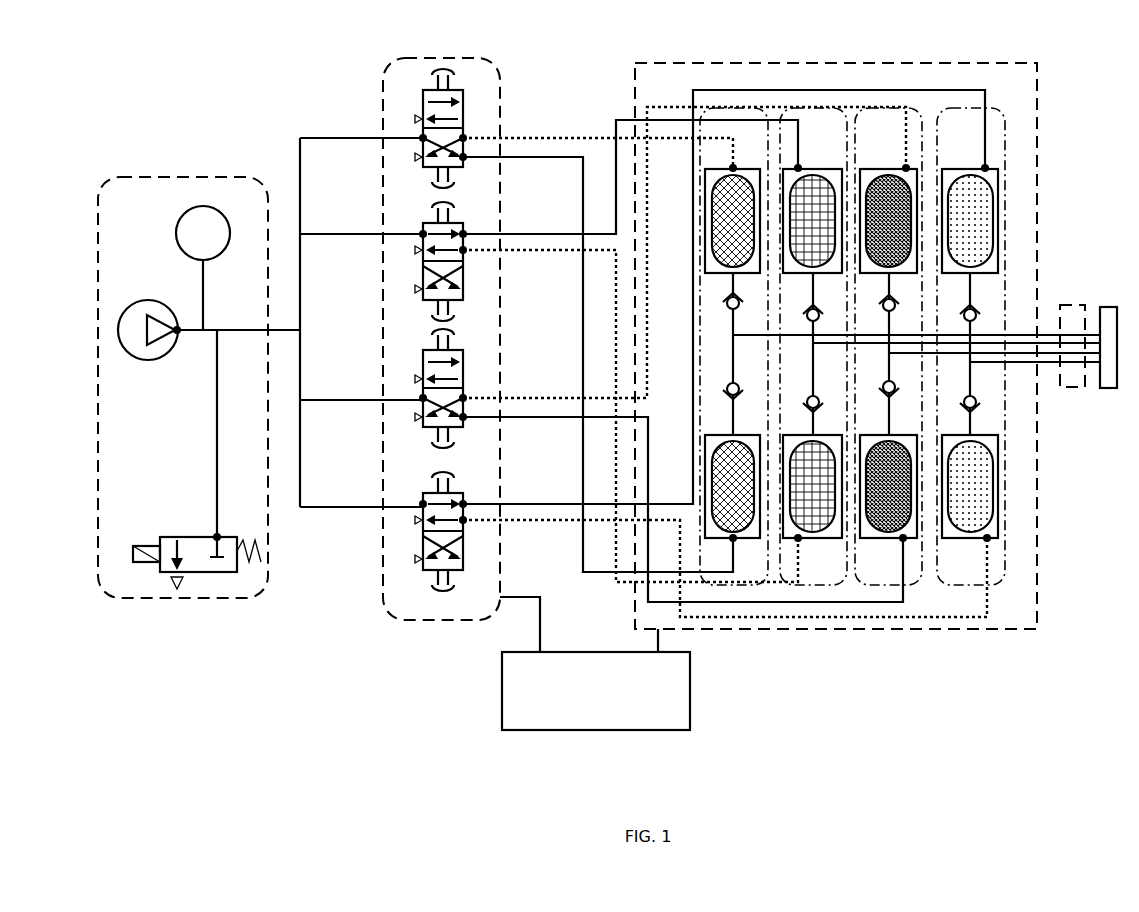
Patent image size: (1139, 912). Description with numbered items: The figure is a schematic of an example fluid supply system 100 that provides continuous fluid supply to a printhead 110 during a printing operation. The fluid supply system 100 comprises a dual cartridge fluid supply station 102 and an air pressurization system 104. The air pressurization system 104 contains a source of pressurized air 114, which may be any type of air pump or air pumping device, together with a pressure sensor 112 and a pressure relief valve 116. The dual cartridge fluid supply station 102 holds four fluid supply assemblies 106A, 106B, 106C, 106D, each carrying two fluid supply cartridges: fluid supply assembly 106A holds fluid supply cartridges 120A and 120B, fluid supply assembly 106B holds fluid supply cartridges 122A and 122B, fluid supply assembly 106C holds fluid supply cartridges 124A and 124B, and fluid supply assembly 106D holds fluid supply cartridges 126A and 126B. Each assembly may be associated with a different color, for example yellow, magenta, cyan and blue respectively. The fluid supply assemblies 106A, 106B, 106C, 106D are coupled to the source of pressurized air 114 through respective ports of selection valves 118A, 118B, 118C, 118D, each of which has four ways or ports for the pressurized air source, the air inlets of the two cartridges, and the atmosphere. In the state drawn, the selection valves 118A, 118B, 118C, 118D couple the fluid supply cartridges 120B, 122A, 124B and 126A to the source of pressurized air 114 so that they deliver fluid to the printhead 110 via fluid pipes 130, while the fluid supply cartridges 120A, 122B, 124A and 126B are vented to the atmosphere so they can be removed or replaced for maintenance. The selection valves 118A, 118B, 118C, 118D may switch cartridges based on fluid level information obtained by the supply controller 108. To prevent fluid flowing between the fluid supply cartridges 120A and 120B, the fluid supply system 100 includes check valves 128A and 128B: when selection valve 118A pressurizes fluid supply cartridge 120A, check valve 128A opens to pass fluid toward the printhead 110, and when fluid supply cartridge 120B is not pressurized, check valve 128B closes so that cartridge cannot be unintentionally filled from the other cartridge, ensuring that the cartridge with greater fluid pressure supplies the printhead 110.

The fluid supply system 100 is at (775, 745).
The dual cartridge fluid supply station 102 is at (836, 630).
The air pressurization system 104 is at (198, 598).
The fluid supply assembly 106A is at (735, 590).
The fluid supply assembly 106B is at (810, 590).
The fluid supply assembly 106C is at (888, 590).
The fluid supply assembly 106D is at (968, 590).
The supply controller 108 is at (595, 663).
The printhead 110 is at (1110, 307).
The pressure sensor 112 is at (203, 207).
The source of pressurized air 114 is at (129, 307).
The pressure relief valve 116 is at (158, 573).
The selection valve 118A is at (463, 102).
The selection valve 118B is at (463, 223).
The selection valve 118C is at (463, 368).
The selection valve 118D is at (463, 563).
The fluid supply cartridge 120A is at (704, 185).
The fluid supply cartridge 120B is at (703, 453).
The fluid supply cartridge 122A is at (825, 167).
The fluid supply cartridge 122B is at (810, 542).
The fluid supply cartridge 124A is at (885, 167).
The fluid supply cartridge 124B is at (866, 542).
The fluid supply cartridge 126A is at (967, 167).
The fluid supply cartridge 126B is at (946, 542).
The check valve 128A is at (726, 303).
The check valve 128B is at (726, 388).
The fluid pipes 130 is at (1070, 304).